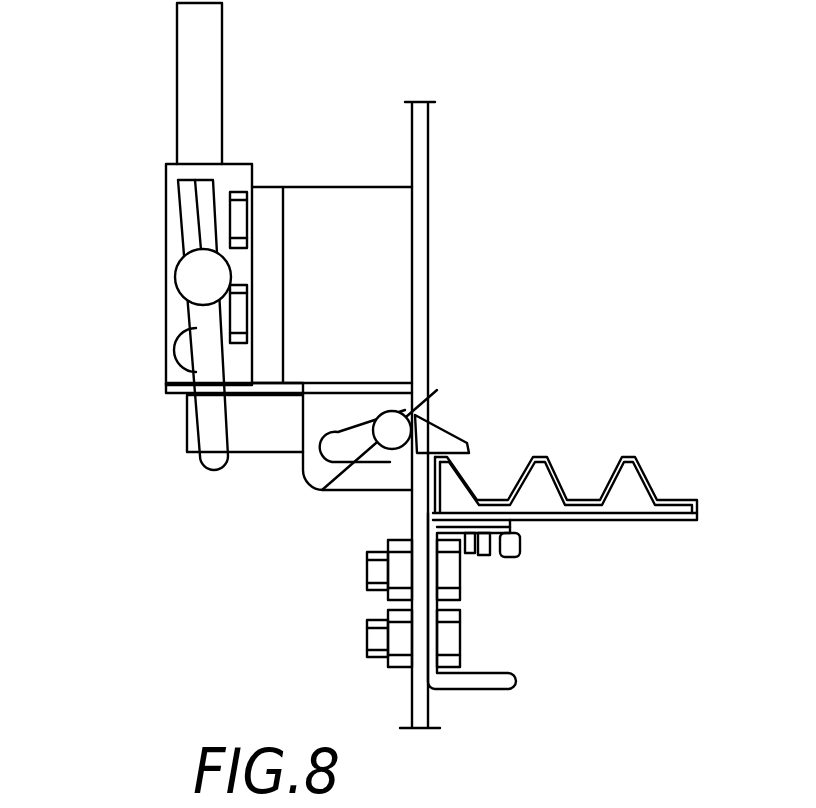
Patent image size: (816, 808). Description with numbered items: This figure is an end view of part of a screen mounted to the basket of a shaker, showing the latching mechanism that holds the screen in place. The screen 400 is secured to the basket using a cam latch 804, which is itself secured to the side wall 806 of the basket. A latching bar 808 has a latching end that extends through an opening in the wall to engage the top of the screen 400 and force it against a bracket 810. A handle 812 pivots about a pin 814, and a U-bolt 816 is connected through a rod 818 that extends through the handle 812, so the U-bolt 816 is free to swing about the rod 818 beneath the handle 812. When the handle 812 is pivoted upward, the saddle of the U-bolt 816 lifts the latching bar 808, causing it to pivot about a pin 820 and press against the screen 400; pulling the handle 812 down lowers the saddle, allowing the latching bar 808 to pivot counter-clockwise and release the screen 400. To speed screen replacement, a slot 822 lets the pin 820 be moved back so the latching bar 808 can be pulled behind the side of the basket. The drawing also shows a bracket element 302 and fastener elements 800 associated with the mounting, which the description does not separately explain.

The handle 812 is at (176, 73).
The cam latch 804 is at (166, 203).
The rod 818 is at (176, 270).
The pin 814 is at (170, 340).
The U-bolt 816 is at (188, 426).
The side wall 806 is at (430, 260).
The pin 820 is at (428, 402).
The latching bar 808 is at (455, 437).
The screen 400 is at (650, 482).
The slot 822 is at (322, 492).
The L bracket 302 is at (447, 495).
The bolts 800 is at (390, 583).
The bracket 810 is at (500, 543).